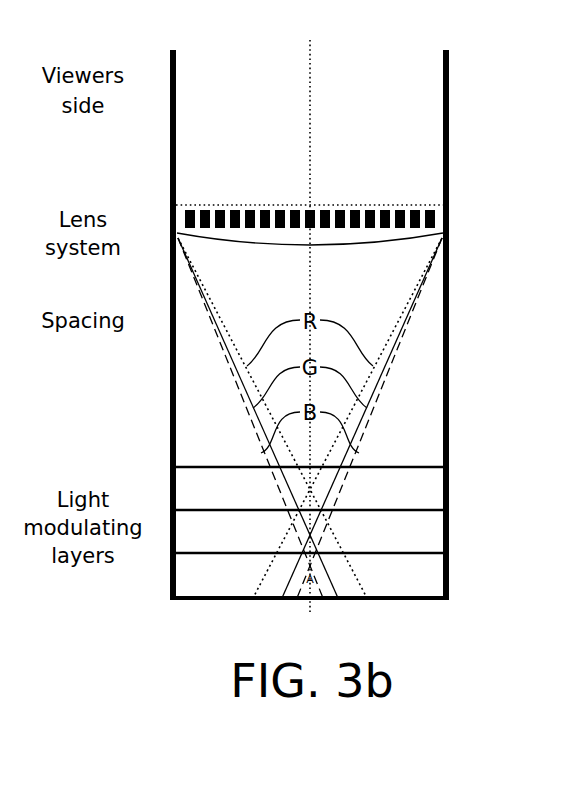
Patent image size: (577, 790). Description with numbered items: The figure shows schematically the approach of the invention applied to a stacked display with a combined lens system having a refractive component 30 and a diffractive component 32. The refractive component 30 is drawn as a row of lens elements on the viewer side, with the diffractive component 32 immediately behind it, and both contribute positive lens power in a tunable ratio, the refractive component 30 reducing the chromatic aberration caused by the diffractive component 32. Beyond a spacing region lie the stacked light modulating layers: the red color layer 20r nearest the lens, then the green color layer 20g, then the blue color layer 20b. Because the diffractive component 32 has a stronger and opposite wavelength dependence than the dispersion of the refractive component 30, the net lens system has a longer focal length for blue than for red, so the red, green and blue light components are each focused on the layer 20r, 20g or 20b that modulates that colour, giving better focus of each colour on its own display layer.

The refractive component 30 is at (414, 210).
The diffractive component 32 is at (399, 246).
The red color layer 20r is at (449, 486).
The green color layer 20g is at (449, 535).
The blue color layer 20b is at (449, 581).